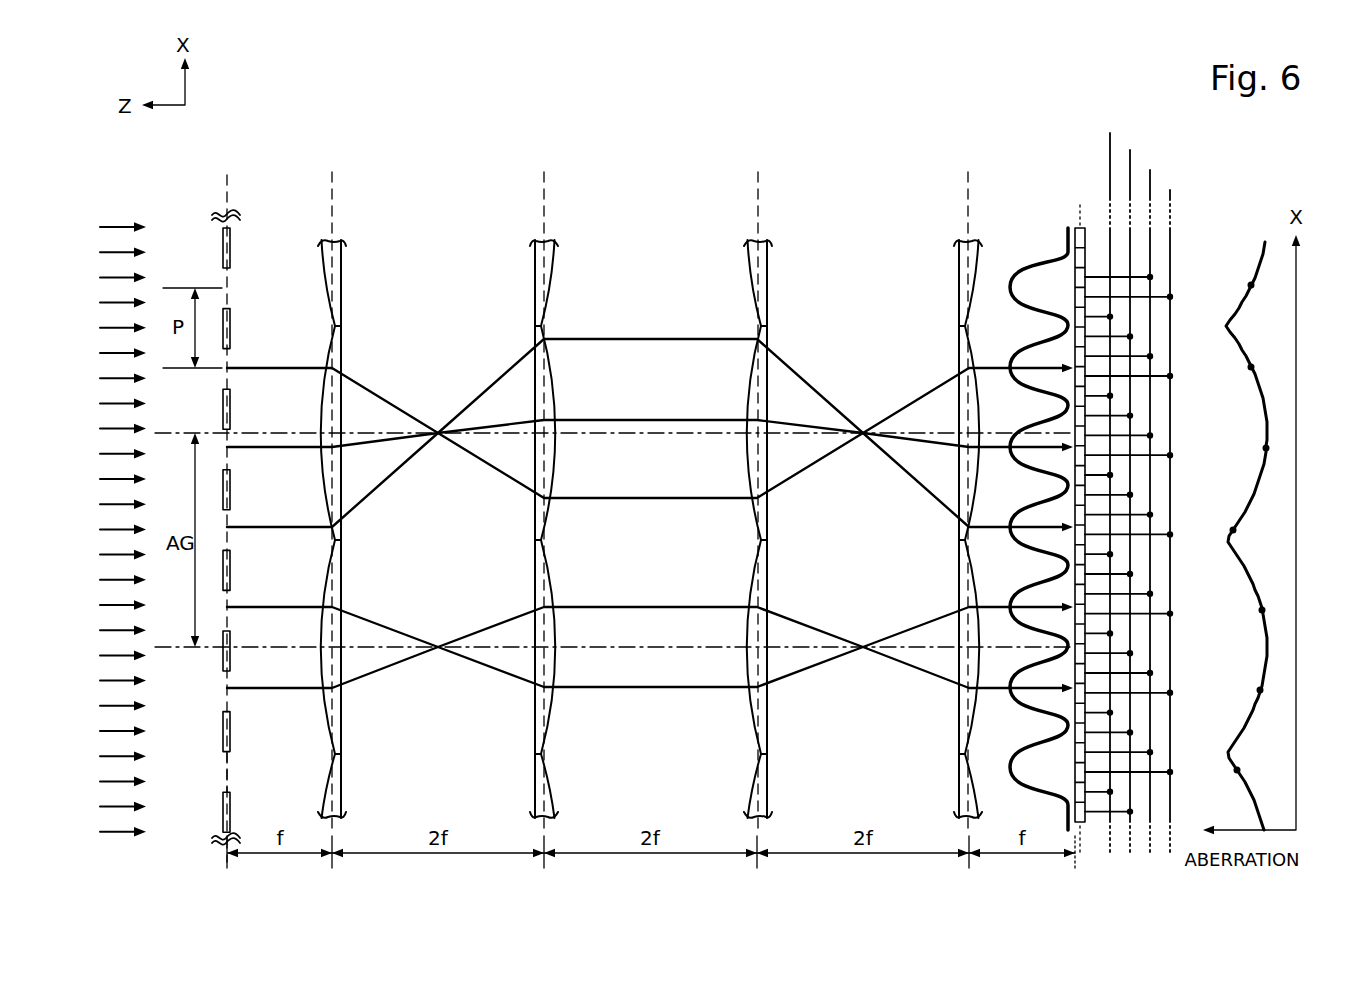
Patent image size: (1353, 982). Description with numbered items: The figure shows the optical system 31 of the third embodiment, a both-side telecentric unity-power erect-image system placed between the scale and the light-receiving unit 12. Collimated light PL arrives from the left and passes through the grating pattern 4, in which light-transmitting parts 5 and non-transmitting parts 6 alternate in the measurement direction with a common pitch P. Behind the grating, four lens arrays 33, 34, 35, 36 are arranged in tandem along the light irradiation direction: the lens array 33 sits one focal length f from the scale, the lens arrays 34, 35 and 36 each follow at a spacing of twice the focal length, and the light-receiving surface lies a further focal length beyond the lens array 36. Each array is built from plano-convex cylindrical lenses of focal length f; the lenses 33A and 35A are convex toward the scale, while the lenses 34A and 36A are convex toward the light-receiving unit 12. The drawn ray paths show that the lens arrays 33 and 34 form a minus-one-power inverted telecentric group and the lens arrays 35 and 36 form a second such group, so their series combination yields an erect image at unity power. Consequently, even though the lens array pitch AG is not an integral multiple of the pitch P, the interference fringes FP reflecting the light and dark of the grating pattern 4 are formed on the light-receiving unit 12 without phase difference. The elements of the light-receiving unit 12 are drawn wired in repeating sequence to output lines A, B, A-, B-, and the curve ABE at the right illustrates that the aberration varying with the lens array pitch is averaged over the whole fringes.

The light PL is at (119, 204).
The grating pattern 4 is at (206, 204).
The light-transmitting part 5 is at (225, 771).
The non-transmitting part 6 is at (225, 811).
The light-receiving unit 12 is at (1058, 173).
The optical system 31 is at (935, 140).
The lens array 33 is at (347, 484).
The lens array 34 is at (503, 484).
The lens array 35 is at (771, 484).
The lens array 36 is at (928, 484).
The lens 33A is at (371, 529).
The lens 34A is at (502, 529).
The lens 35A is at (796, 529).
The lens 36A is at (926, 529).
The interference fringes FP is at (1035, 266).
The aberration curve ABE is at (1260, 232).
The signal line A is at (1110, 479).
The signal line B is at (1130, 489).
The signal line A- is at (1155, 498).
The signal line B- is at (1175, 508).